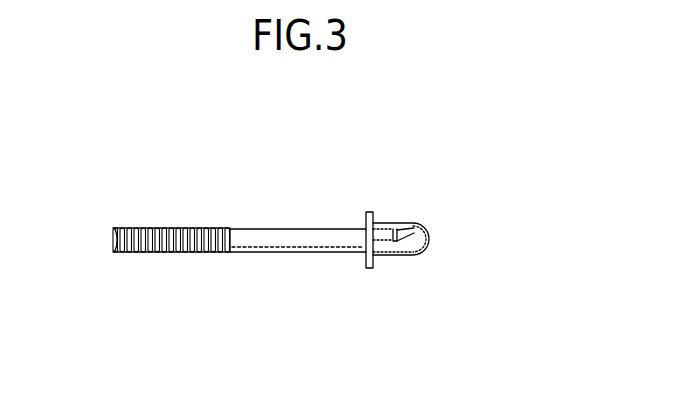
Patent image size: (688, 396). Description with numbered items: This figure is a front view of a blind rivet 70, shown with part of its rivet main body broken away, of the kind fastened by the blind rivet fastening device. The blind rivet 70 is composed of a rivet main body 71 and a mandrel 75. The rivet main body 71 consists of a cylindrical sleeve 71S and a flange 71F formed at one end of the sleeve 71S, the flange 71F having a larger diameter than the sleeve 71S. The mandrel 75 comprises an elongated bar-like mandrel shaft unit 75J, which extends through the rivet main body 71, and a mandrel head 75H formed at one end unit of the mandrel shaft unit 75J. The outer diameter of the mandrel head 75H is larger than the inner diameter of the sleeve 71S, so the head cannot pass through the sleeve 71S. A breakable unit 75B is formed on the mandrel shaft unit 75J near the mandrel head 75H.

The blind rivet 70 is at (328, 185).
The mandrel 75 is at (203, 218).
The mandrel shaft unit 75J is at (287, 246).
The breakable unit 75B is at (406, 228).
The mandrel head 75H is at (431, 246).
The rivet main body 71 is at (388, 268).
The flange 71F is at (373, 211).
The sleeve 71S is at (397, 229).